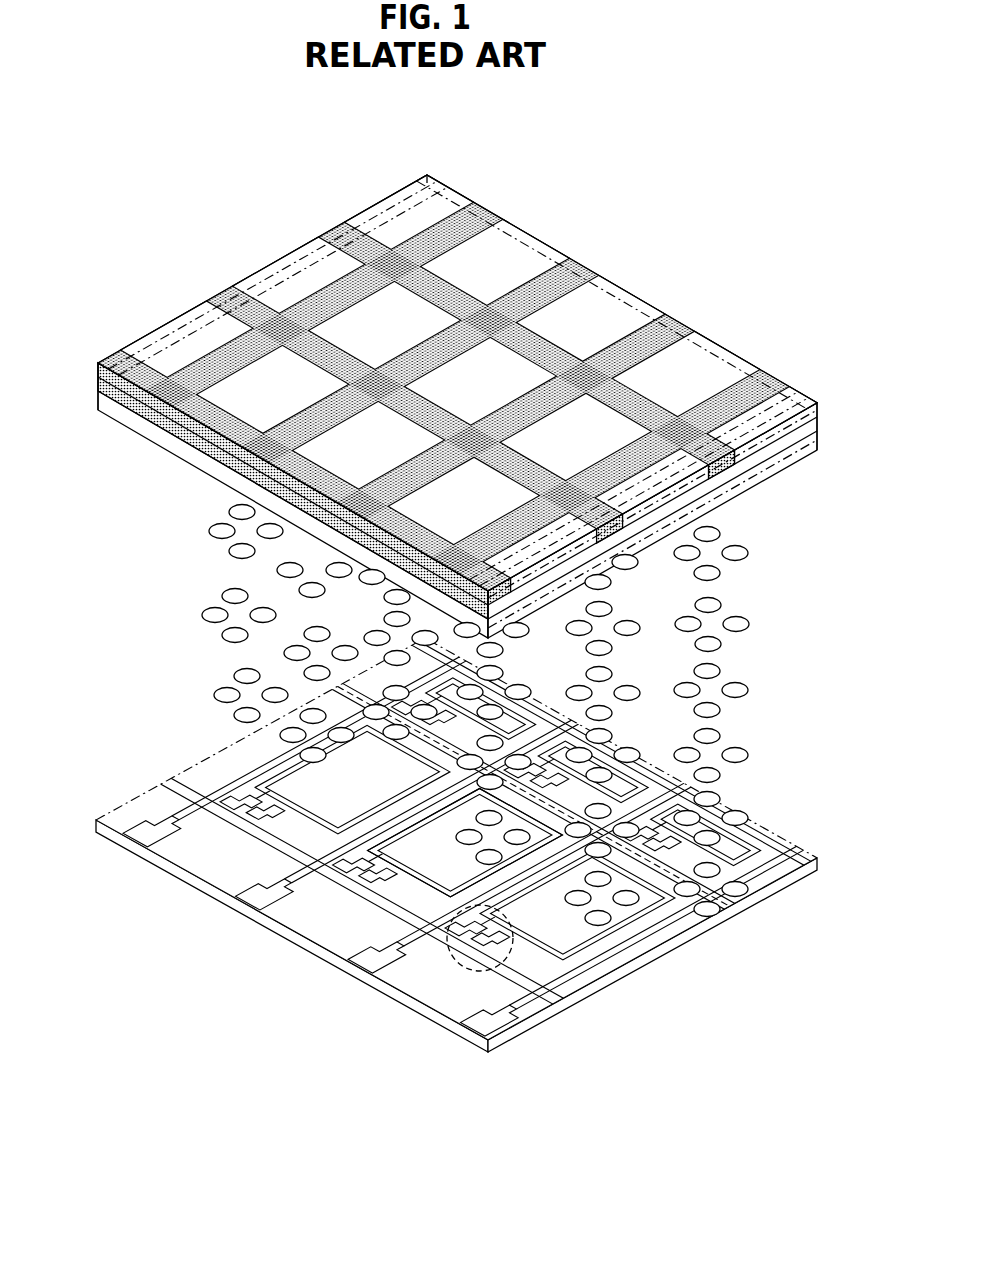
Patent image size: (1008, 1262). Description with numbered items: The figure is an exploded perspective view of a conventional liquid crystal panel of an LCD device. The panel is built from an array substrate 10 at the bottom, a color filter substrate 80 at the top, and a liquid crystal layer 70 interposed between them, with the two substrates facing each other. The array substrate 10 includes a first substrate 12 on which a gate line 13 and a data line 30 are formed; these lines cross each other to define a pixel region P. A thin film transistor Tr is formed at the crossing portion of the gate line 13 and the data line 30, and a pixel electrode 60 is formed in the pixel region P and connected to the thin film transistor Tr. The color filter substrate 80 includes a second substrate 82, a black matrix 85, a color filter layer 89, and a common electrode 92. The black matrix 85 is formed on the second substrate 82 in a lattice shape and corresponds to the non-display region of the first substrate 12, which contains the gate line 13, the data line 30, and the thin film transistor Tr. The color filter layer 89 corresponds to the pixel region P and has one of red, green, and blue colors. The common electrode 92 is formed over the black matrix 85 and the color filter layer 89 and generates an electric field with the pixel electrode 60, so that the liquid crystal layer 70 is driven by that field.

The color filter substrate 80 is at (422, 357).
The second substrate 82 is at (98, 371).
The black matrix 85 is at (675, 330).
The color filter layer 89 is at (457, 334).
The common electrode 92 is at (98, 398).
The liquid crystal layer 70 is at (742, 688).
The array substrate 10 is at (451, 881).
The first substrate 12 is at (475, 1046).
The gate line 13 is at (548, 1005).
The data line 30 is at (572, 962).
The pixel electrode 60 is at (600, 930).
The pixel region P is at (352, 900).
The thin film transistor Tr is at (448, 960).